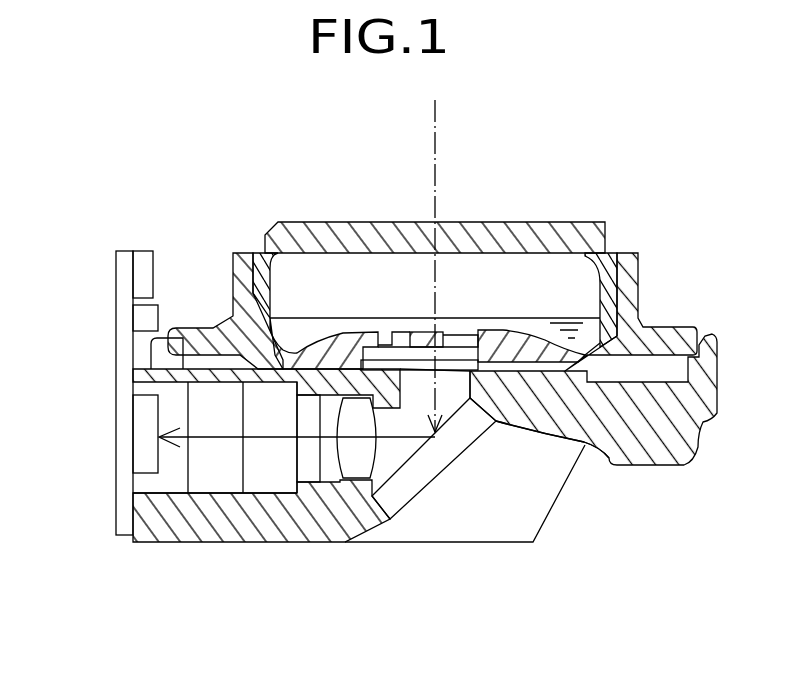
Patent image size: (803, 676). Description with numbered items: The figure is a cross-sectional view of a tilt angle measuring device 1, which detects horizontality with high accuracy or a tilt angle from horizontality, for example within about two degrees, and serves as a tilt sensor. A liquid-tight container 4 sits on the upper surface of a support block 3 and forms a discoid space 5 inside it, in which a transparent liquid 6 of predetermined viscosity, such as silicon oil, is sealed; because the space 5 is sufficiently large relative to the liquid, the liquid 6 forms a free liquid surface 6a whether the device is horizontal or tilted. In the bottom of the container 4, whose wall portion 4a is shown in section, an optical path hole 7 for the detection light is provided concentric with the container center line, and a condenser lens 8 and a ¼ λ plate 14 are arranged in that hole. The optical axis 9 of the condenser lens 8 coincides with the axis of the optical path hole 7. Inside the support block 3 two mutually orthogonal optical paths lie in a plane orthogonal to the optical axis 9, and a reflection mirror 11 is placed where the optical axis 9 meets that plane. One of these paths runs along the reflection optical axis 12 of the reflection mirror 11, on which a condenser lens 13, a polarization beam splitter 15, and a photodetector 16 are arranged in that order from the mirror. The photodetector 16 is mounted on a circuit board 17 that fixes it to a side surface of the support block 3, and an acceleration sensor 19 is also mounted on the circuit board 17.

The tilt angle measuring device 1 is at (141, 163).
The support block 3 is at (665, 466).
The container 4 is at (573, 224).
The top wall of lens barrel 4a is at (475, 330).
The space 5 is at (352, 292).
The liquid 6 is at (303, 332).
The free liquid surface 6a is at (490, 318).
The optical path hole 7 is at (458, 330).
The condenser lens 8 is at (418, 350).
The optical axis 9 is at (452, 362).
The reflection mirror 11 is at (420, 492).
The reflection optical axis 12 is at (277, 442).
The condenser lens 13 is at (347, 483).
The ¼ λ plate 14 is at (467, 415).
The polarization beam splitter 15 is at (220, 493).
The photodetector 16 is at (160, 462).
The circuit board 17 is at (115, 346).
The acceleration sensor 19 is at (160, 311).